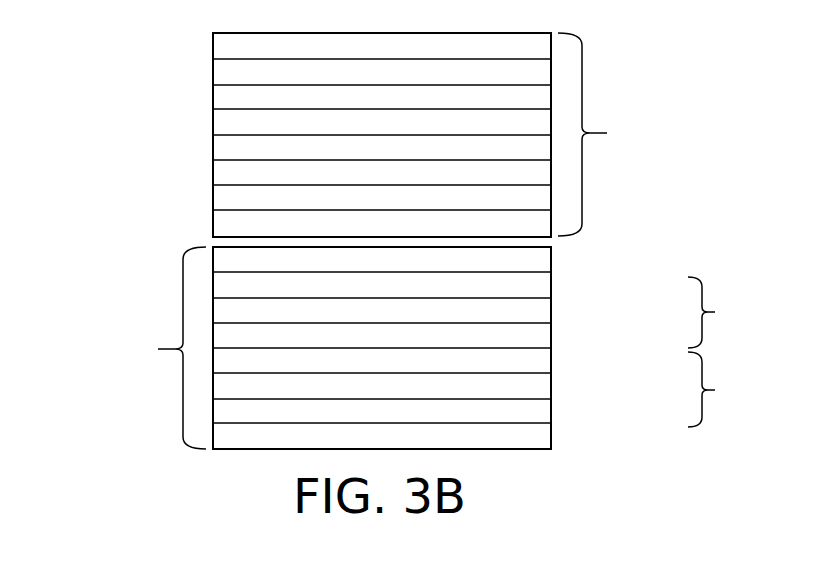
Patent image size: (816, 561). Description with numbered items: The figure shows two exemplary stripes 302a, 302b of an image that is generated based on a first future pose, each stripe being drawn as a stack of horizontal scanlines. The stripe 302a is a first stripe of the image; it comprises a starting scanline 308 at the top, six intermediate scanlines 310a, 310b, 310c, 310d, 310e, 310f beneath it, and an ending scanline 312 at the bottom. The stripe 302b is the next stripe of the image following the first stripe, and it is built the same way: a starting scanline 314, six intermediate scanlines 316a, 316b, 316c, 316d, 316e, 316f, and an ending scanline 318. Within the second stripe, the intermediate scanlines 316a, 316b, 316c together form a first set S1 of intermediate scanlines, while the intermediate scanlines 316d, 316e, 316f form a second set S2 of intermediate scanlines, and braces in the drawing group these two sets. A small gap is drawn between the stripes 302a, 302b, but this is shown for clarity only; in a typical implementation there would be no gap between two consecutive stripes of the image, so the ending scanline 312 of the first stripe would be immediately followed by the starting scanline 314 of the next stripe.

The stripe 302a is at (439, 135).
The stripe 302b is at (322, 348).
The starting scanline 308 is at (238, 42).
The intermediate scanline 310a is at (238, 70).
The intermediate scanline 310b is at (238, 97).
The intermediate scanline 310c is at (238, 123).
The intermediate scanline 310d is at (238, 147).
The intermediate scanline 310e is at (238, 173).
The intermediate scanline 310f is at (238, 199).
The ending scanline 312 is at (238, 225).
The starting scanline 314 is at (527, 255).
The intermediate scanline 316a is at (527, 284).
The intermediate scanline 316b is at (527, 311).
The intermediate scanline 316c is at (527, 337).
The intermediate scanline 316d is at (527, 361).
The intermediate scanline 316e is at (527, 386).
The intermediate scanline 316f is at (527, 412).
The ending scanline 318 is at (527, 438).
The first set of intermediate scanlines S1 is at (718, 312).
The second set of intermediate scanlines S2 is at (718, 389).